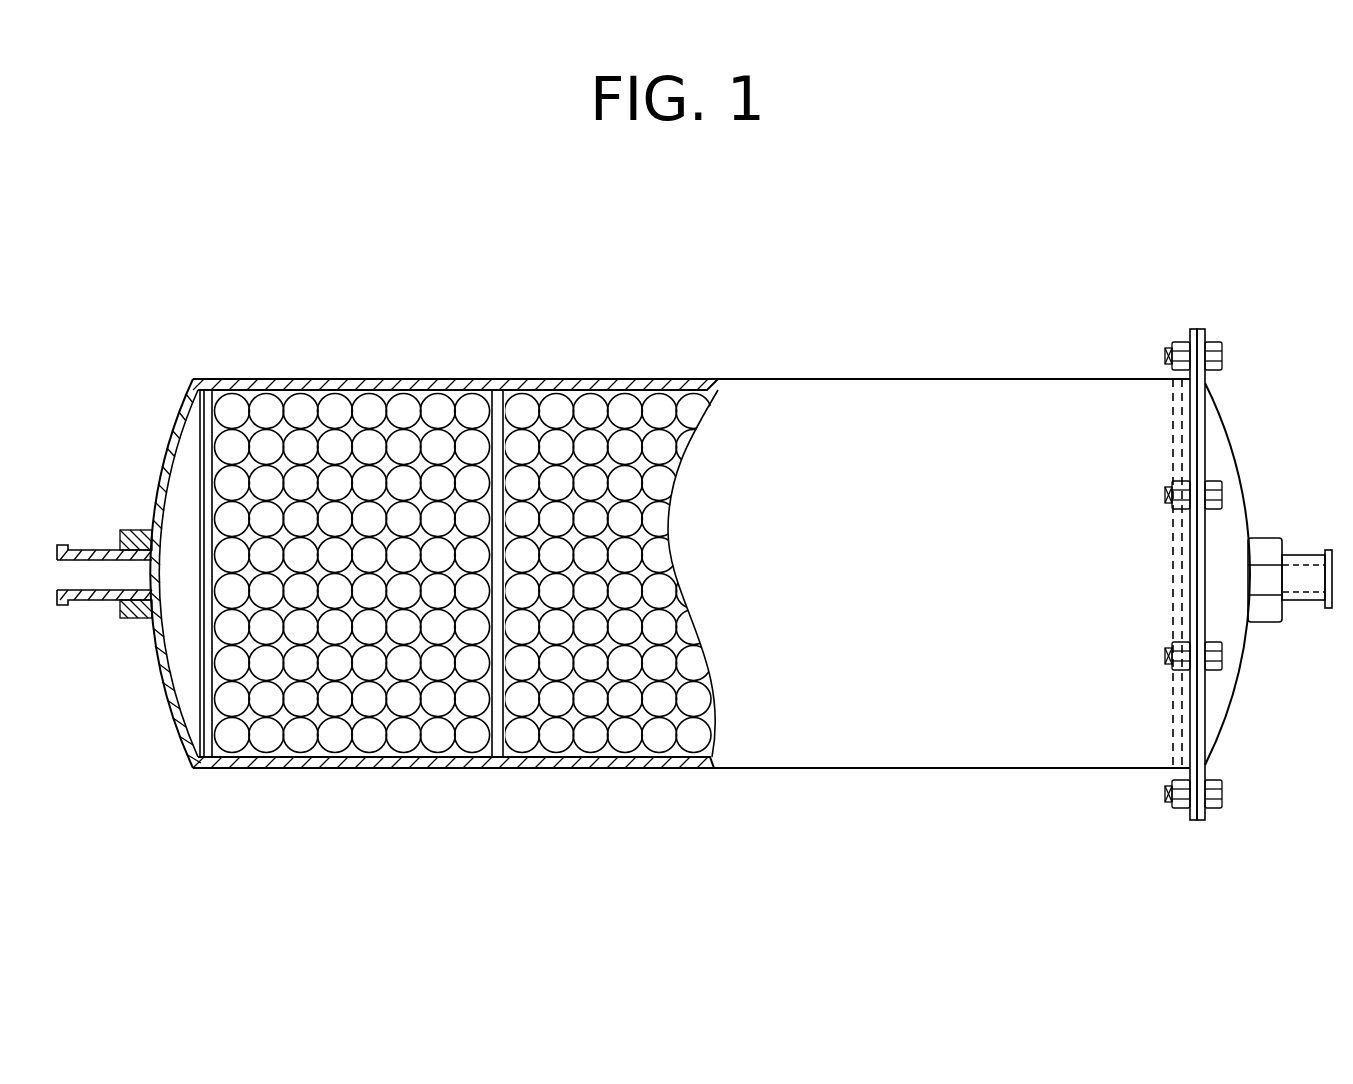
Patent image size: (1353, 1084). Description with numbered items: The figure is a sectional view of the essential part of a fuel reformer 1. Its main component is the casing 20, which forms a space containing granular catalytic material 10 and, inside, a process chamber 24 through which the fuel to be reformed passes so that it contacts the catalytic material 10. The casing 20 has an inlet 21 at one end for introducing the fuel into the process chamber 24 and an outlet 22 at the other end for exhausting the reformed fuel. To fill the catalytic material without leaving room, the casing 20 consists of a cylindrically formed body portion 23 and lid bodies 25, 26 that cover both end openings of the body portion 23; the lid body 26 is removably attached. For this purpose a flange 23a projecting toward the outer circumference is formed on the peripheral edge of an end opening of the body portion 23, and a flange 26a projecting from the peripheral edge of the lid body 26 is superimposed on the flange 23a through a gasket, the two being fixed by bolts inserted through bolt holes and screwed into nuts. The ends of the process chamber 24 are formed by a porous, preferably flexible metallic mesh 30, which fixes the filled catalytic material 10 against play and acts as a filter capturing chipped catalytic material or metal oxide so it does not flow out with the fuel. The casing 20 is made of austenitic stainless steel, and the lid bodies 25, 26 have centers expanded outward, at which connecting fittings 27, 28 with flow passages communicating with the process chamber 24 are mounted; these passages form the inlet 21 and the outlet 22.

The fuel reformer 1 is at (750, 288).
The catalytic material 10 is at (695, 742).
The casing 20 is at (918, 379).
The inlet 21 is at (97, 562).
The outlet 22 is at (1309, 568).
The body portion 23 is at (421, 379).
The flange 23a is at (1192, 822).
The process chamber 24 is at (416, 768).
The lid body 25 is at (170, 432).
The lid body 26 is at (1232, 447).
The flange 26a is at (1207, 818).
The connecting fitting 27 is at (95, 603).
The connecting fitting 28 is at (1303, 605).
The metallic mesh 30 is at (200, 770).